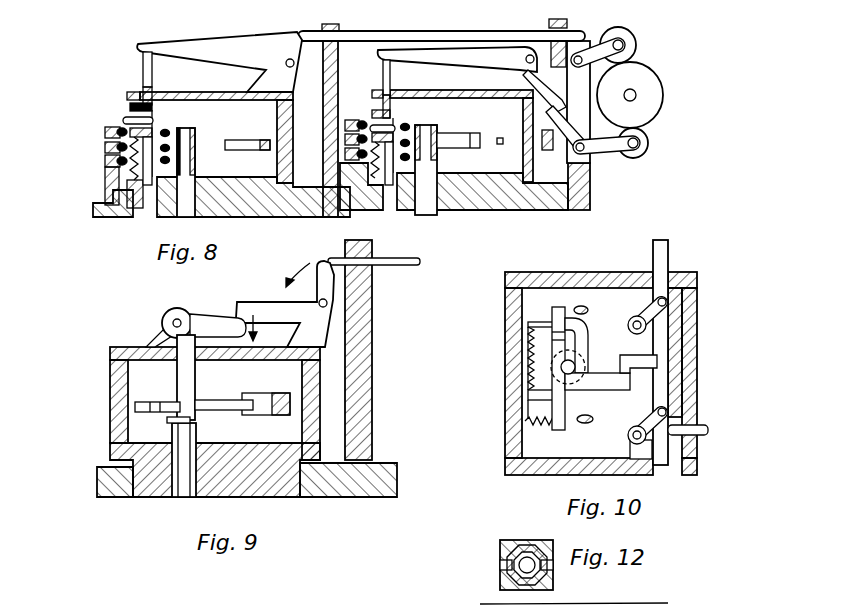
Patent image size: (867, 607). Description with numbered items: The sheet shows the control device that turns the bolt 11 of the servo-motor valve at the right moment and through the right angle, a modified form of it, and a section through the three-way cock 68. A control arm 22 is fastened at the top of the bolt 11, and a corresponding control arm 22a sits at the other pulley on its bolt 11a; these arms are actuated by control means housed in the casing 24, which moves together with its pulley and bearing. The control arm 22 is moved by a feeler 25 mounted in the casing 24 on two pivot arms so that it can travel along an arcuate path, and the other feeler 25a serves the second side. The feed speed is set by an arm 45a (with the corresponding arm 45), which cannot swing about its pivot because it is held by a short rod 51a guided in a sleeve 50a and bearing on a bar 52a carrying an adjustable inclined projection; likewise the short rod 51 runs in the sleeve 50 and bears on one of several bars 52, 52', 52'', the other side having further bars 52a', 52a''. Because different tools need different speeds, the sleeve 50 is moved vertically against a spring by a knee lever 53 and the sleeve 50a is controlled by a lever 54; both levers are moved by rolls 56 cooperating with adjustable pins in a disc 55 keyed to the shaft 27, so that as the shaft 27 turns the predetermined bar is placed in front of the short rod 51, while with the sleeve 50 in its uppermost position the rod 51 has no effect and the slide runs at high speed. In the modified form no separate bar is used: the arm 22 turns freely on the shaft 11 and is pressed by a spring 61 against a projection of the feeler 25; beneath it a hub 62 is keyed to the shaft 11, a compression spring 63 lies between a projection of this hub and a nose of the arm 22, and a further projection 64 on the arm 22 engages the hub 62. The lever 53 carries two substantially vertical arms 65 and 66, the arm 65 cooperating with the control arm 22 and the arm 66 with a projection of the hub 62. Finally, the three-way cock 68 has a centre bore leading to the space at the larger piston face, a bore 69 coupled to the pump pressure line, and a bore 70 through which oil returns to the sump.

In FIG. 8, the bolt 11 is at (186, 170).
In FIG. 9, the bolt 11 is at (182, 497).
In FIG. 10, the bolt 11 is at (562, 367).
In FIG. 8, the valve stem 11a is at (428, 212).
In FIG. 9, the control arm 22 is at (220, 410).
In FIG. 10, the control arm 22 is at (622, 388).
In FIG. 8, the control arm 22a is at (461, 149).
In FIG. 8, the casing 24 is at (213, 92).
In FIG. 9, the casing 24 is at (113, 385).
In FIG. 10, the casing 24 is at (562, 462).
In FIG. 8, the feeler 25 is at (262, 140).
In FIG. 9, the feeler 25 is at (282, 393).
In FIG. 10, the feeler 25 is at (653, 252).
In FIG. 8, the feeler 25a is at (500, 138).
In FIG. 8, the shaft 27 is at (636, 95).
In FIG. 8, the contact springs 45 is at (166, 130).
In FIG. 8, the arm 45a is at (410, 127).
In FIG. 8, the sleeve 50 is at (135, 100).
In FIG. 8, the sleeve 50a is at (391, 110).
In FIG. 8, the short rod 51 is at (125, 120).
In FIG. 8, the short rod 51a is at (376, 125).
In FIG. 8, the bar 52 is at (99, 125).
In FIG. 8, the bar 52' is at (99, 141).
In FIG. 8, the bar 52'' is at (99, 158).
In FIG. 8, the bar 52a is at (330, 119).
In FIG. 8, the contact 52a' is at (330, 134).
In FIG. 8, the contact 52a'' is at (330, 150).
In FIG. 8, the knee lever 53 is at (233, 53).
In FIG. 9, the knee lever 53 is at (270, 302).
In FIG. 8, the lever 54 is at (447, 60).
In FIG. 8, the disc 55 is at (650, 105).
In FIG. 8, the rolls 56 is at (631, 38).
In FIG. 10, the spring 61 is at (528, 425).
In FIG. 9, the hub 62 is at (167, 420).
In FIG. 10, the hub 62 is at (528, 404).
In FIG. 10, the compression spring 63 is at (530, 345).
In FIG. 10, the projection 64 is at (583, 340).
In FIG. 9, the arm 65 is at (195, 384).
In FIG. 10, the arm 65 is at (589, 413).
In FIG. 10, the arm 66 is at (586, 310).
In FIG. 12, the three-way cock 68 is at (500, 548).
In FIG. 12, the bore 69 is at (553, 580).
In FIG. 12, the bore 70 is at (512, 578).